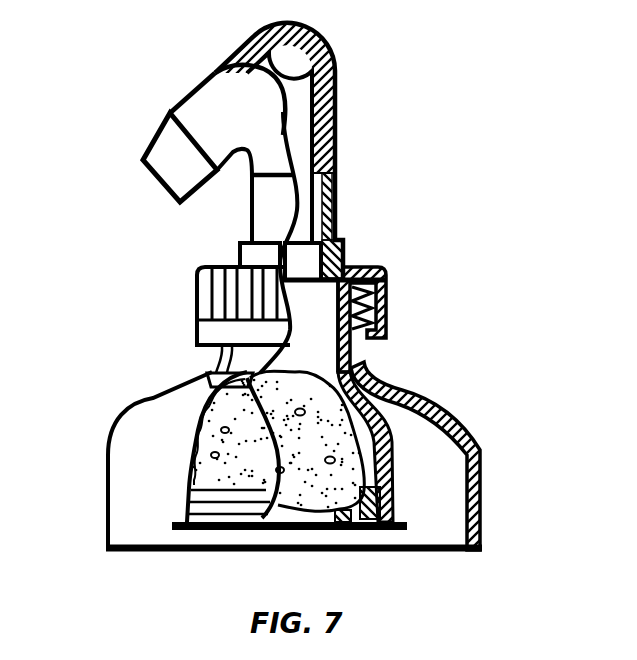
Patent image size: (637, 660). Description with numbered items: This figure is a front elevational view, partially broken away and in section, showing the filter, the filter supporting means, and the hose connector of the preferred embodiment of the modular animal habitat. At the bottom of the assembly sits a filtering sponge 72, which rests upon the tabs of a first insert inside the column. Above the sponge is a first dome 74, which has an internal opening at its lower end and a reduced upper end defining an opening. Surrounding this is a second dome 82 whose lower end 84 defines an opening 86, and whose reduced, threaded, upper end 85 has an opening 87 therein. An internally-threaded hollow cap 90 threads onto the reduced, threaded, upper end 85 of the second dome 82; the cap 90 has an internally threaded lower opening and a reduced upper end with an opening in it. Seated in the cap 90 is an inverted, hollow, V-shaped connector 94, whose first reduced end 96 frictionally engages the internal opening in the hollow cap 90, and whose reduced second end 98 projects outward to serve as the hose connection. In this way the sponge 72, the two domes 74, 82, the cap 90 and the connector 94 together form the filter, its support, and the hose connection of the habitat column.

The filtering sponge 72 is at (226, 461).
The first dome 74 is at (193, 440).
The second dome 82 is at (470, 423).
The lower end 84 is at (438, 550).
The reduced, threaded, upper end 85 is at (365, 352).
The opening 86 is at (438, 556).
The opening 87 is at (345, 312).
The internally-threaded hollow cap 90 is at (197, 291).
The inverted, hollow, V-shaped connector 94 is at (337, 78).
The first reduced end 96 is at (318, 212).
The reduced second end 98 is at (156, 147).